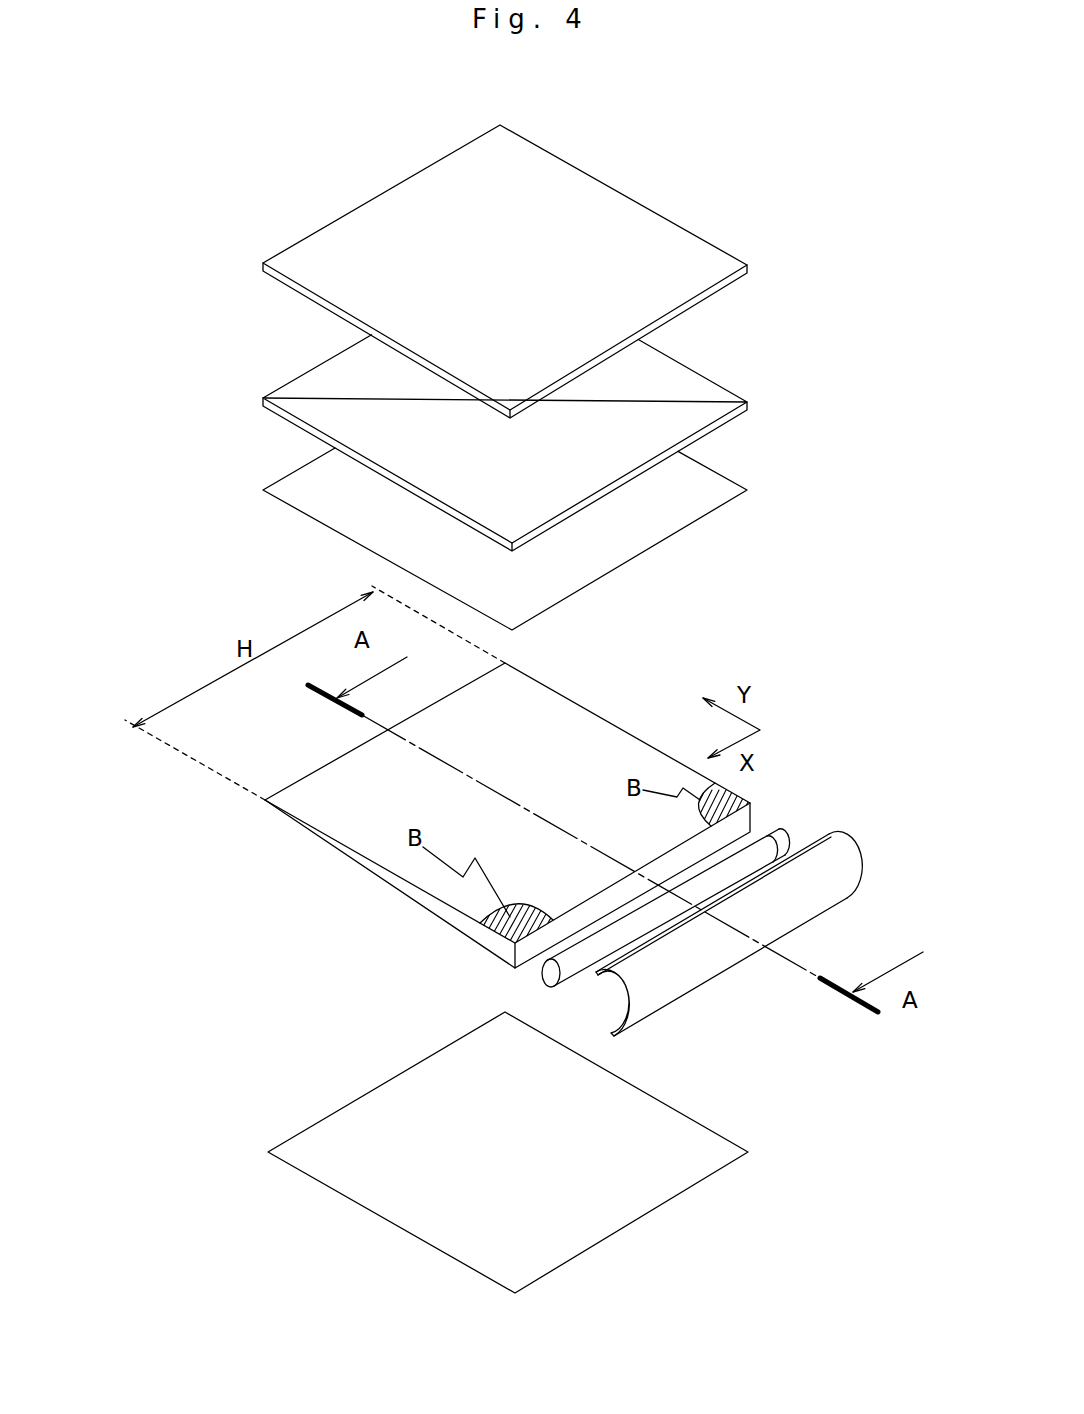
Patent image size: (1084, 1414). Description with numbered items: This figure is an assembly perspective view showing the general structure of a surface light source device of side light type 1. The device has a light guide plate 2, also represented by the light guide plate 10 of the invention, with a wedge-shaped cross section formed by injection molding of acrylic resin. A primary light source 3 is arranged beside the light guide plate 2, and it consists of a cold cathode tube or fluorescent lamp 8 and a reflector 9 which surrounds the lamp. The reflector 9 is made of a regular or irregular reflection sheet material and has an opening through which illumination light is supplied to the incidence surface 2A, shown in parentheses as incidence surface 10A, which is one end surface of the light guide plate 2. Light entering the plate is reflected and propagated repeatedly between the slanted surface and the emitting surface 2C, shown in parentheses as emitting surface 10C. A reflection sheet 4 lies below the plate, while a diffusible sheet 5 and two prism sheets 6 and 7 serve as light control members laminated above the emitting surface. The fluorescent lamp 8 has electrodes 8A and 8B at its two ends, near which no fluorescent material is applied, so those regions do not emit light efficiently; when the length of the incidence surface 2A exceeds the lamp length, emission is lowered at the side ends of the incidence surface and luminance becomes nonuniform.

The surface light source device of side light type 1 is at (569, 734).
The light guide plate 2 is at (488, 810).
The light guide plate 10 is at (488, 810).
The incidence surface 2A is at (632, 882).
The incidence surface 10A is at (653, 877).
The emitting surface 2C is at (509, 801).
The emitting surface 10C is at (633, 757).
The primary light source 3 is at (669, 883).
The reflection sheet 4 is at (578, 1235).
The diffusible sheet 5 is at (650, 537).
The prism sheet 6 is at (673, 378).
The prism sheet 7 is at (673, 247).
The cold cathode tube (fluorescent lamp) 8 is at (669, 884).
The electrode 8A is at (572, 968).
The electrode 8B is at (787, 833).
The reflector 9 is at (703, 962).